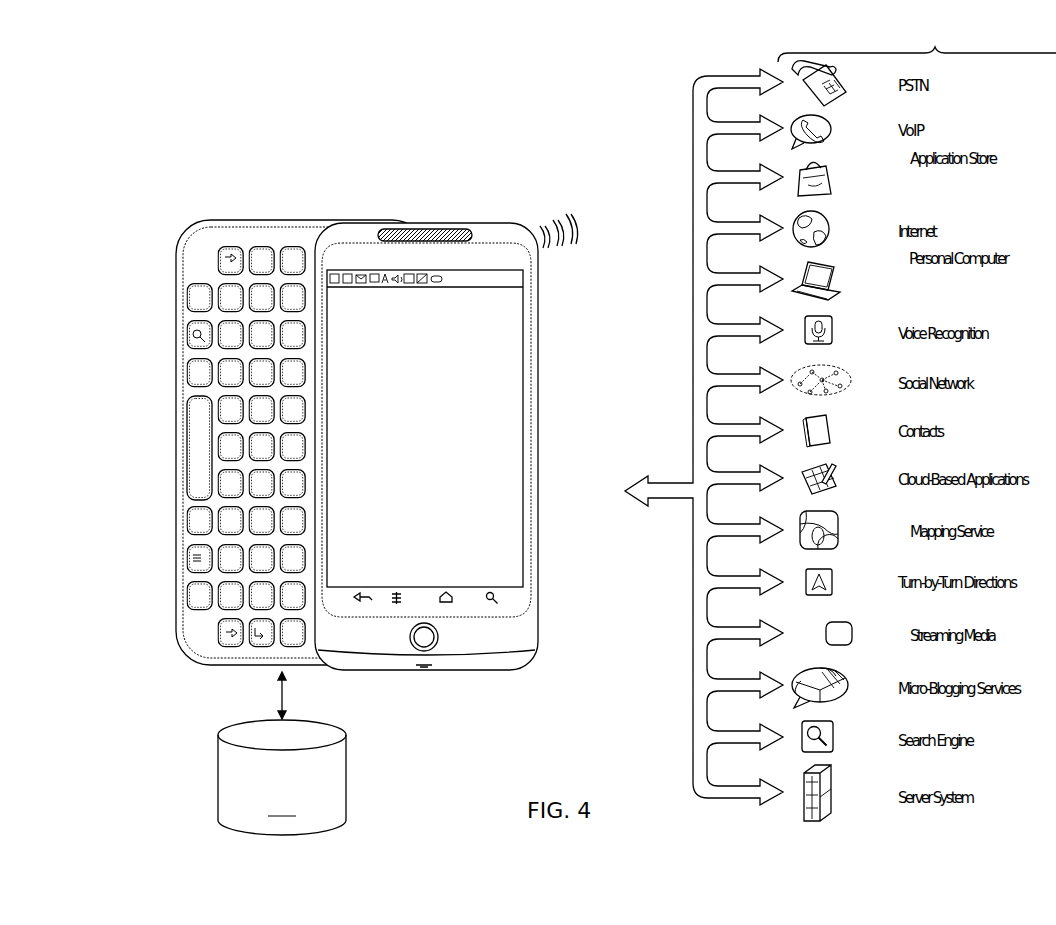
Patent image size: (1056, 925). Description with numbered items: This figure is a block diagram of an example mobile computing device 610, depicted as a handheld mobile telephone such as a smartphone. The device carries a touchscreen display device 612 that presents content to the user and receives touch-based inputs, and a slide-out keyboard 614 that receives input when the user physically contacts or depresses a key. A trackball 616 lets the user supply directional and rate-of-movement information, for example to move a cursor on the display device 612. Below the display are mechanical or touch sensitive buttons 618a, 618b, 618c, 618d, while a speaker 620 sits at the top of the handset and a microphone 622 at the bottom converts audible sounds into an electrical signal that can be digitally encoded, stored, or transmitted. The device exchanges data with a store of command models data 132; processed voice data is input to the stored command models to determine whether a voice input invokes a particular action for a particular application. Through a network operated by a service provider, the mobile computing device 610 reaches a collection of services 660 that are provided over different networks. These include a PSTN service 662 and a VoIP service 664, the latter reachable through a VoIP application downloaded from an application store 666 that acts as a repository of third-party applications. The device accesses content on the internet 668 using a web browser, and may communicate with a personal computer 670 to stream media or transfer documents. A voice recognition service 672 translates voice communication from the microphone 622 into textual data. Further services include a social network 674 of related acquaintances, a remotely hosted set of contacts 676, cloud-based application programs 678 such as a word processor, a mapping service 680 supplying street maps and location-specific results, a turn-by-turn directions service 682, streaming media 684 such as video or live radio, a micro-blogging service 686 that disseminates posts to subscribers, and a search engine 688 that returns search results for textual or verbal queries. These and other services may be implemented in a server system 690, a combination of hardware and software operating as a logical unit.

The command models data 132 is at (282, 753).
The mobile computing device 610 is at (478, 166).
The touchscreen display device 612 is at (538, 435).
The keyboard 614 is at (284, 219).
The trackball 616 is at (438, 637).
The button 618a is at (361, 594).
The button 618b is at (398, 592).
The button 618c is at (446, 594).
The button 618d is at (492, 592).
The speaker 620 is at (431, 228).
The microphone 622 is at (424, 668).
The services 660 is at (917, 43).
The PSTN service 662 is at (838, 92).
The VoIP service 664 is at (830, 132).
The application store 666 is at (832, 178).
The internet 668 is at (830, 232).
The personal computer 670 is at (838, 284).
The voice recognition service 672 is at (833, 326).
The social network 674 is at (845, 374).
The contacts 676 is at (831, 434).
The cloud-based application programs 678 is at (836, 480).
The mapping service 680 is at (839, 528).
The turn-by-turn directions service 682 is at (833, 580).
The streaming media 684 is at (852, 632).
The micro-blogging service 686 is at (845, 688).
The search engine 688 is at (834, 735).
The server system 690 is at (832, 792).